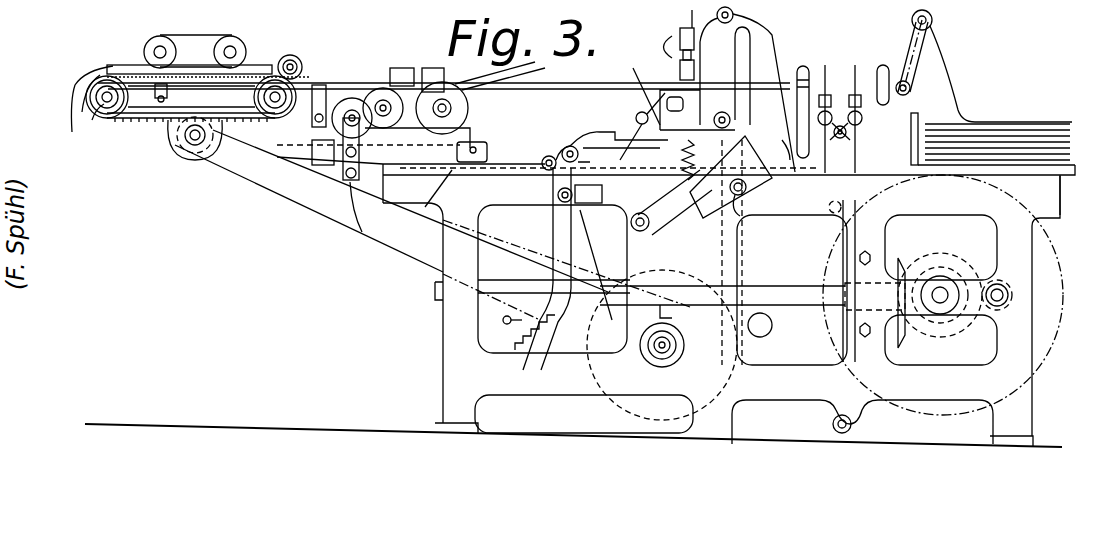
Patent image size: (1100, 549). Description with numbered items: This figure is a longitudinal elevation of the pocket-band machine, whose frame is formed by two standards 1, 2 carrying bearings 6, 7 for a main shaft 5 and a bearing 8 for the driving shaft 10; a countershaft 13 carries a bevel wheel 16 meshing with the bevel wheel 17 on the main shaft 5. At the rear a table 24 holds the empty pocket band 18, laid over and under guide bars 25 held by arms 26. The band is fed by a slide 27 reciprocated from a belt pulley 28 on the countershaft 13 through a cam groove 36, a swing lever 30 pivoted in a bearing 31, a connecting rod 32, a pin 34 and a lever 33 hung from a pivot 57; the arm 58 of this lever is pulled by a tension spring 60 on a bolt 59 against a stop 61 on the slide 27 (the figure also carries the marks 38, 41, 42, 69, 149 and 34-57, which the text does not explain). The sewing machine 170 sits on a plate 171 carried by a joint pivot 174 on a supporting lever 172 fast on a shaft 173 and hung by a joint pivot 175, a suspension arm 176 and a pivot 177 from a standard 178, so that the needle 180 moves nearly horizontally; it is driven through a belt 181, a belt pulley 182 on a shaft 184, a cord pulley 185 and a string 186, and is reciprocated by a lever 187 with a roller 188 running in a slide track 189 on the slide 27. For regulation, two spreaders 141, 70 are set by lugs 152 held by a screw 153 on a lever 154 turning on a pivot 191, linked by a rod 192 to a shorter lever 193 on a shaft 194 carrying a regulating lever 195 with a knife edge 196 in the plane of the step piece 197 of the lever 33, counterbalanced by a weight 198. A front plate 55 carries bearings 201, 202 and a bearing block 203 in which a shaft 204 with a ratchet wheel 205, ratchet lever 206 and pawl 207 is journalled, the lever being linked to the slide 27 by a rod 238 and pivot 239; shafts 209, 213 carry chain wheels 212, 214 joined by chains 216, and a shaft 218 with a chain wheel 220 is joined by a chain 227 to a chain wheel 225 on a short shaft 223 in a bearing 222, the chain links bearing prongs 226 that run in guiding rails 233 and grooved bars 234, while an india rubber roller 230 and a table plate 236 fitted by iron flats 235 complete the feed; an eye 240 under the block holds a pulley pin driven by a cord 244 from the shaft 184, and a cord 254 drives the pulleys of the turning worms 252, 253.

The standard 1 is at (455, 352).
The standard 2 is at (1055, 202).
The main shaft 5 is at (433, 292).
The bearing 6 is at (440, 303).
The bearing 7 is at (856, 281).
The bearing 8 is at (1008, 2).
The driving shaft 10 is at (1000, 294).
The countershaft 13 is at (942, 292).
The bevel wheel 16 is at (955, 330).
The bevel wheel 17 is at (905, 335).
The pocket band 18 is at (70, 120).
The table 24 is at (1068, 163).
The guide bars 25 is at (932, 22).
The arms 26 is at (918, 56).
The slide 27 is at (610, 185).
The belt pulley 28 is at (1055, 340).
The swing lever 30 is at (862, 8).
The bearing 31 is at (833, 424).
The connecting rod 32 is at (585, 205).
The lever 33 is at (553, 232).
The pin 34 is at (556, 200).
The cam groove 36 is at (1058, 2).
The feed plate 38 is at (812, 4).
The upright 41 is at (790, 108).
The post 42 is at (889, 72).
The plate 55 is at (333, 160).
The pivot 57 is at (575, 162).
The arm 58 is at (585, 133).
The bolt 59 is at (700, 218).
The tension spring 60 is at (674, 169).
The stop 61 is at (639, 126).
The pivot 69 is at (842, 203).
The spreader 70 is at (859, 114).
The spreader 141 is at (825, 111).
The plate 149 is at (795, 175).
The lugs 152 is at (838, 102).
The screw 153 is at (848, 132).
The lever 154 is at (840, 257).
The sewing machine 170 is at (672, 50).
The plate 171 is at (639, 91).
The supporting lever 172 is at (640, 148).
The shaft 173 is at (594, 265).
The joint pivot 174 is at (640, 114).
The joint pivot 175 is at (735, 124).
The suspension arm 176 is at (728, 52).
The pivot 177 is at (722, 63).
The standard 178 is at (801, 150).
The needle 180 is at (690, 14).
The belt 181 is at (873, 408).
The belt pulley 182 is at (655, 355).
The shaft 184 is at (660, 355).
The cord pulley 185 is at (590, 372).
The string 186 is at (735, 243).
The lever 187 is at (640, 235).
The roller 188 is at (759, 213).
The slide track 189 is at (760, 185).
The pivot 191 is at (850, 215).
The rod 192 is at (780, 325).
The shorter lever 193 is at (655, 310).
The shaft 194 is at (642, 335).
The regulating lever 195 is at (575, 325).
The knife edge 196 is at (503, 325).
The step piece 197 is at (535, 360).
The weight 198 is at (770, 335).
The bearing 201 is at (362, 200).
The bearing 202 is at (462, 134).
The bearing block 203 is at (322, 92).
The shaft 204 is at (370, 5).
The ratchet wheel 205 is at (358, 234).
The ratchet lever 206 is at (390, 178).
The pawl 207 is at (322, 168).
The shaft 209 is at (395, 118).
The chain wheels 212 is at (440, 80).
The shaft 213 is at (452, 108).
The chain wheels 214 is at (528, 68).
The chains 216 is at (498, 85).
The shaft 218 is at (112, 130).
The chain wheel 220 is at (118, 112).
The bearing 222 is at (250, 115).
The short shaft 223 is at (262, 125).
The chain wheel 225 is at (255, 135).
The prongs 226 is at (92, 124).
The chain 227 is at (180, 140).
The india rubber roller 230 is at (288, 56).
The guiding rails 233 is at (118, 75).
The grooved bars 234 is at (132, 65).
The iron flats 235 is at (355, 100).
The table plate 236 is at (78, 82).
The rod 238 is at (438, 212).
The pivot 239 is at (549, 156).
The eye 240 is at (193, 150).
The cord 244 is at (390, 258).
The turning worm 252 is at (242, 46).
The turning worm 253 is at (158, 40).
The cord 254 is at (190, 40).
The pivot bar 34-57 is at (600, 2).